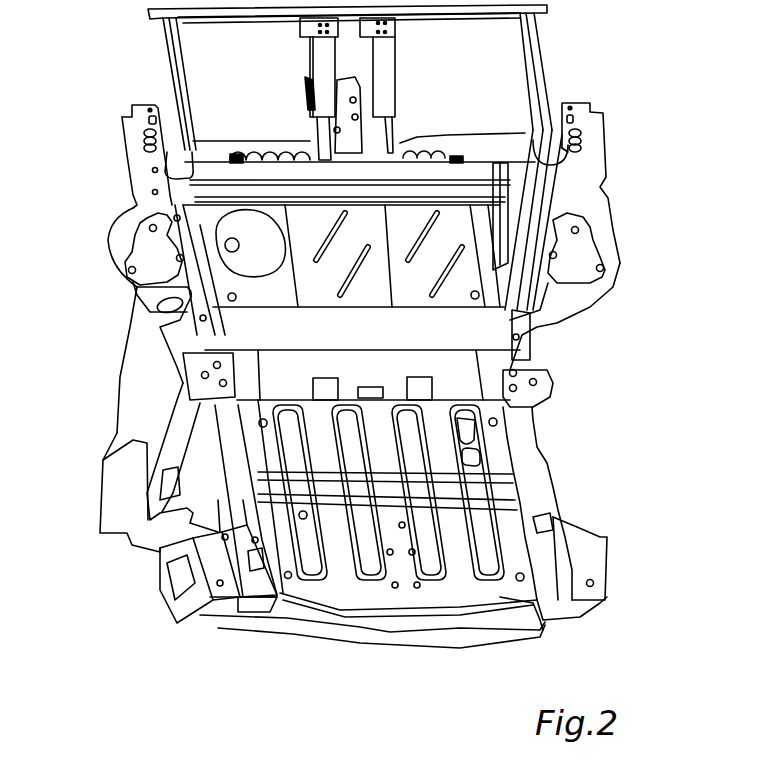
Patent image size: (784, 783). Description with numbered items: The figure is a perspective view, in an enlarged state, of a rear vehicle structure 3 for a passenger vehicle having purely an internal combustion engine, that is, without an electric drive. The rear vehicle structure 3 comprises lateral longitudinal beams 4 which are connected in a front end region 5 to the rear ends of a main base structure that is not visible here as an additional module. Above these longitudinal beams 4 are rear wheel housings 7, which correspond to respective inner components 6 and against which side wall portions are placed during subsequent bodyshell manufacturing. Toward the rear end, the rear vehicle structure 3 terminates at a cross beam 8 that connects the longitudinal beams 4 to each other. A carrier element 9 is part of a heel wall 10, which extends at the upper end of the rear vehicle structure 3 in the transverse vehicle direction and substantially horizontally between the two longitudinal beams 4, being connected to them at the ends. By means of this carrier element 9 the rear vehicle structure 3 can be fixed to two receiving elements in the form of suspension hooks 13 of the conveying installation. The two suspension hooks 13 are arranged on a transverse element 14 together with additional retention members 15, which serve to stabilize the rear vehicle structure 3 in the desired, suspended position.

The rear vehicle structure 3 is at (658, 151).
The lateral longitudinal beam 4 is at (173, 200).
The front end region 5 is at (123, 127).
The inner component 6 is at (147, 368).
The rear wheel housing 7 is at (110, 470).
The cross beam 8 is at (385, 634).
The carrier element 9 is at (424, 148).
The heel wall 10 is at (468, 125).
The suspension hook 13 is at (163, 47).
The transverse element 14 is at (150, 21).
The retention member 15 is at (320, 47).